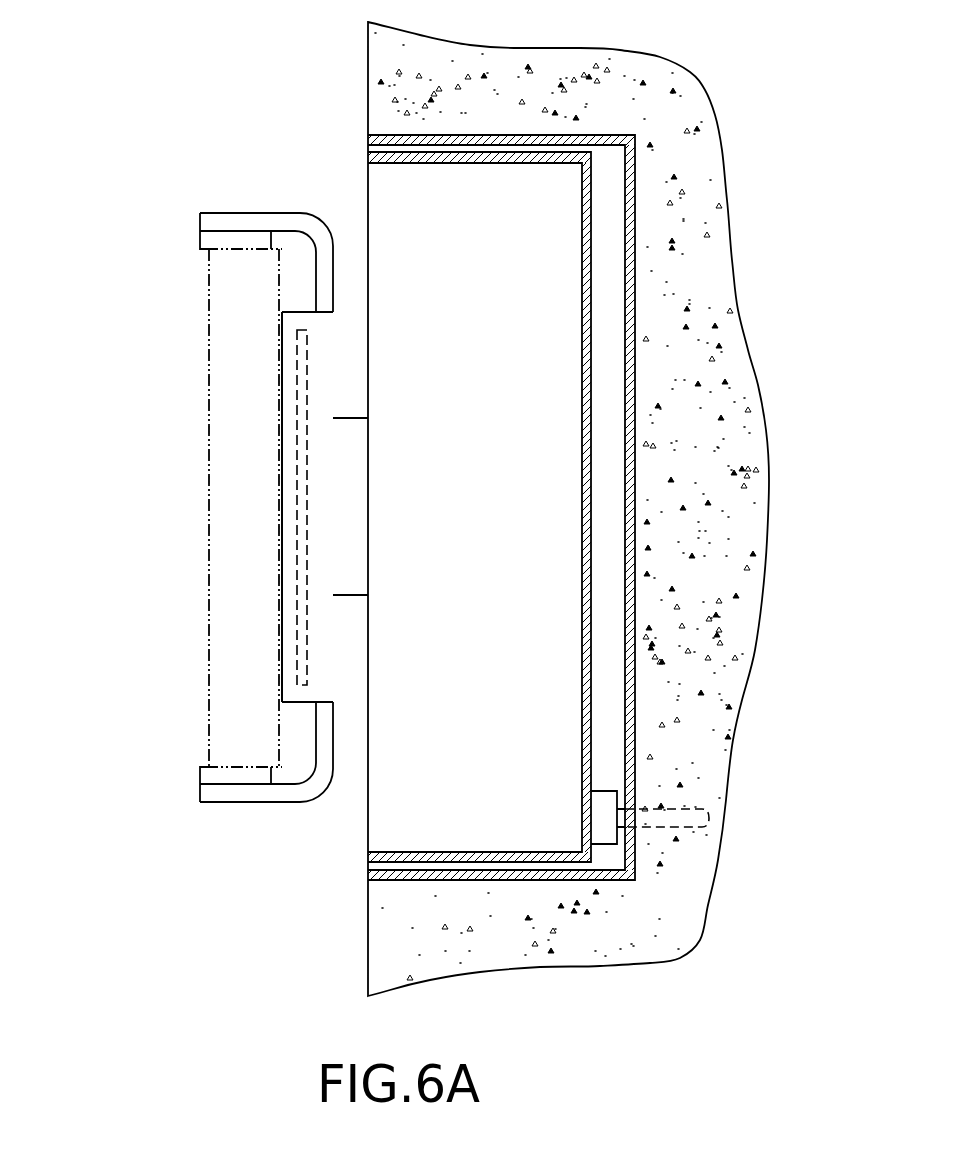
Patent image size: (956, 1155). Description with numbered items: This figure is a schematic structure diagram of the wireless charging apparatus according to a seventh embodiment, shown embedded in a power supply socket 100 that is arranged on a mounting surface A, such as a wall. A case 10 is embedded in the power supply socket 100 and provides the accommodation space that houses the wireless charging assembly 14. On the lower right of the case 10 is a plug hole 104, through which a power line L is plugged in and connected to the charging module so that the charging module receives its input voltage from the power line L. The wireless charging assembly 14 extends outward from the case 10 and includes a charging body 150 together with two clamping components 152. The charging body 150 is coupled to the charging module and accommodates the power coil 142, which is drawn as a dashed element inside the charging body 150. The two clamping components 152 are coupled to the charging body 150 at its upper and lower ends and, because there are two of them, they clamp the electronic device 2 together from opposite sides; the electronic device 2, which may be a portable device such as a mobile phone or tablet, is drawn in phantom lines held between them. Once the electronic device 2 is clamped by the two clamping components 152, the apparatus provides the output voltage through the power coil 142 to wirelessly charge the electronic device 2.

The wall / concrete structure A is at (367, 81).
The power supply socket 100 is at (522, 133).
The case 10 is at (367, 157).
The wireless charging assembly 14 is at (219, 450).
The clamping component 152 is at (175, 235).
The electronic device 2 is at (222, 414).
The power coil 142 is at (302, 488).
The charging body 150 is at (285, 588).
The plug hole 104 is at (600, 800).
The power line L is at (672, 815).